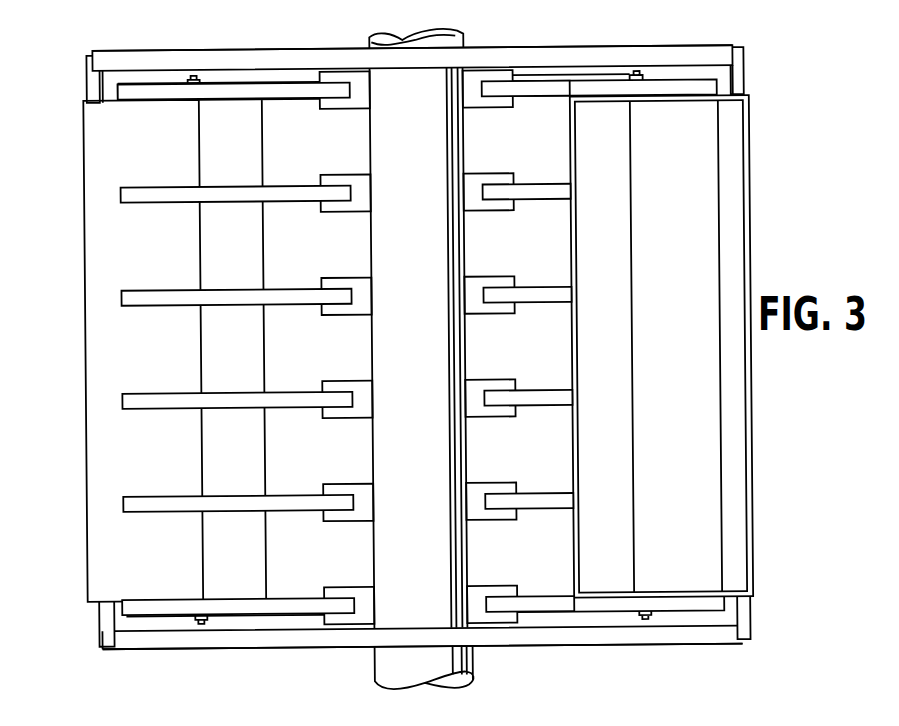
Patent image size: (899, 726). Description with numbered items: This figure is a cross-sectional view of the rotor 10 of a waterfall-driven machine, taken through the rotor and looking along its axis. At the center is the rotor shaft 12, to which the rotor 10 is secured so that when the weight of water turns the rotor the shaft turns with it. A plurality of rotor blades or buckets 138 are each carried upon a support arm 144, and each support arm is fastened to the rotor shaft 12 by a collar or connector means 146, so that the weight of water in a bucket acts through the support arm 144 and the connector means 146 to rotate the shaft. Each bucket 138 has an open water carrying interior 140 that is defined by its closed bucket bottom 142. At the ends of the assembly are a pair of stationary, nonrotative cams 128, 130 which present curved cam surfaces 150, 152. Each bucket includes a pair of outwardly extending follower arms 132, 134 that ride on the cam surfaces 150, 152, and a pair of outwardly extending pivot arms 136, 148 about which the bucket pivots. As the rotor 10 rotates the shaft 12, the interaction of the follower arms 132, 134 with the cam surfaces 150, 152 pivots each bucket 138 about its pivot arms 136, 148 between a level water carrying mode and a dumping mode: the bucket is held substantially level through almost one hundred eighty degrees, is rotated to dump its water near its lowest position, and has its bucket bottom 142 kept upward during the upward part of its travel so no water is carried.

The rotor 10 is at (80, 111).
The rotor shaft 12 is at (458, 262).
The stationary nonrotative cam 128 is at (618, 46).
The stationary nonrotative cam 130 is at (275, 640).
The follower arm 132 is at (88, 74).
The follower arm 134 is at (100, 618).
The pivot arm 136 is at (200, 627).
The rotor blade or bucket 138 is at (93, 356).
The open water carrying interior 140 is at (686, 212).
The bucket bottom 142 is at (137, 292).
The support arm 144 is at (282, 187).
The collar or connector means 146 is at (517, 140).
The pivot arm 148 is at (194, 77).
The curved cam surface 150 is at (528, 44).
The curved cam surface 152 is at (563, 637).